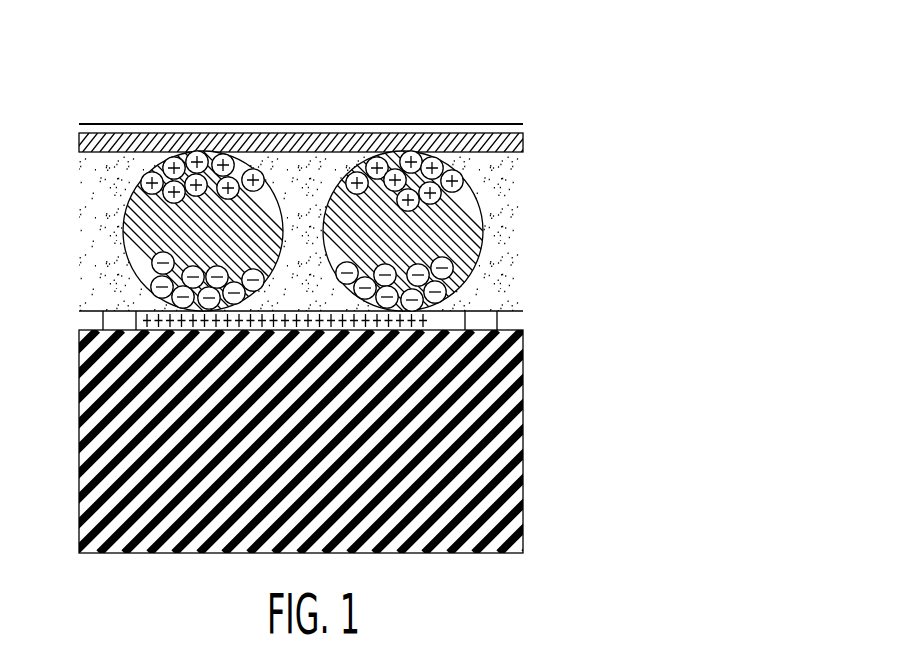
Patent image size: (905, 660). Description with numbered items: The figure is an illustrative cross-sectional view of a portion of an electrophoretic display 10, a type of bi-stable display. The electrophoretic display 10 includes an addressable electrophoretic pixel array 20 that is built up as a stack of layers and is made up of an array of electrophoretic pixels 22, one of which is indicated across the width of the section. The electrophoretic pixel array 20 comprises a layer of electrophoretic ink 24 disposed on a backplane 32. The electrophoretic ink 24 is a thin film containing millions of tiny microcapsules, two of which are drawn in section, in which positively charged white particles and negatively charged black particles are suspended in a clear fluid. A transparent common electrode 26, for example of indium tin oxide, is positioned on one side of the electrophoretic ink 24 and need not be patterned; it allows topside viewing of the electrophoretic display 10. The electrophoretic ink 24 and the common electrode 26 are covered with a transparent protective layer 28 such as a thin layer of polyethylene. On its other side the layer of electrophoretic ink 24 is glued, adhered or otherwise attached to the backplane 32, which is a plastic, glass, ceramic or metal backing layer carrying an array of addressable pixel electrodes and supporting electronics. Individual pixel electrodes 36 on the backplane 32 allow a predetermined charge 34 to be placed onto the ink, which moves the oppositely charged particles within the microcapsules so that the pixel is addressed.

The electrophoretic display 10 is at (511, 56).
The electrophoretic pixel array 20 is at (583, 118).
The electrophoretic pixel 22 is at (473, 107).
The electrophoretic ink 24 is at (537, 150).
The transparent common electrode 26 is at (513, 130).
The transparent protective layer 28 is at (507, 125).
The backplane 32 is at (585, 312).
The predetermined charge 34 is at (432, 324).
The pixel electrode 36 is at (459, 331).